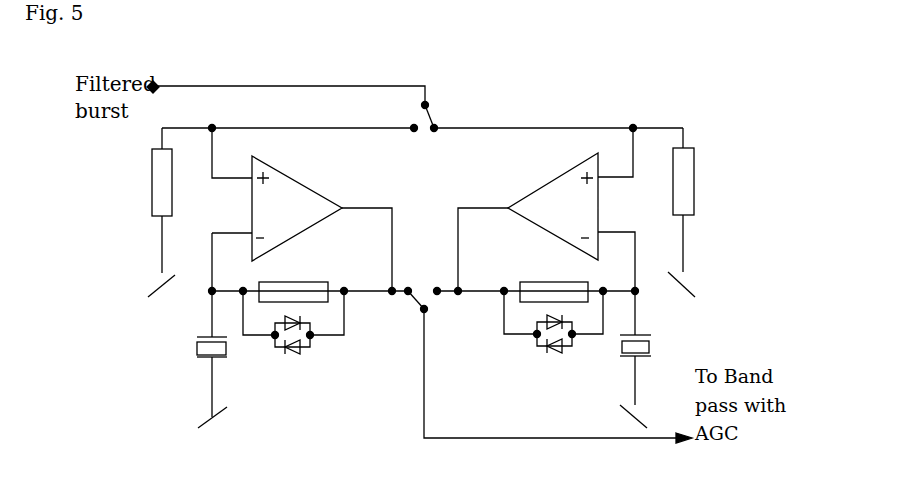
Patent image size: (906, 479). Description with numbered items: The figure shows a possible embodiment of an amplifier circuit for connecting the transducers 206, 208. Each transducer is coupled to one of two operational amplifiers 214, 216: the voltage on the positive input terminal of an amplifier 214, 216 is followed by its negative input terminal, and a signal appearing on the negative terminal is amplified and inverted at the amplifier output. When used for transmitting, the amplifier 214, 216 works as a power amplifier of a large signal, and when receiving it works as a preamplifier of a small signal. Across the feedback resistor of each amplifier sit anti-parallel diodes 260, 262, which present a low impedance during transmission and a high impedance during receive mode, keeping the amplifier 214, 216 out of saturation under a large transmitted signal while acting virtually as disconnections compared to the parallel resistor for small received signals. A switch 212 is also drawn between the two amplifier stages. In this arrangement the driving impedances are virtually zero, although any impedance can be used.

The transducer 206 is at (228, 348).
The transducer 208 is at (655, 344).
The switch 212 is at (412, 306).
The operational amplifier 214 is at (291, 169).
The operational amplifier 216 is at (541, 186).
The anti-parallel diodes 260 is at (549, 360).
The anti-parallel diodes 262 is at (310, 355).